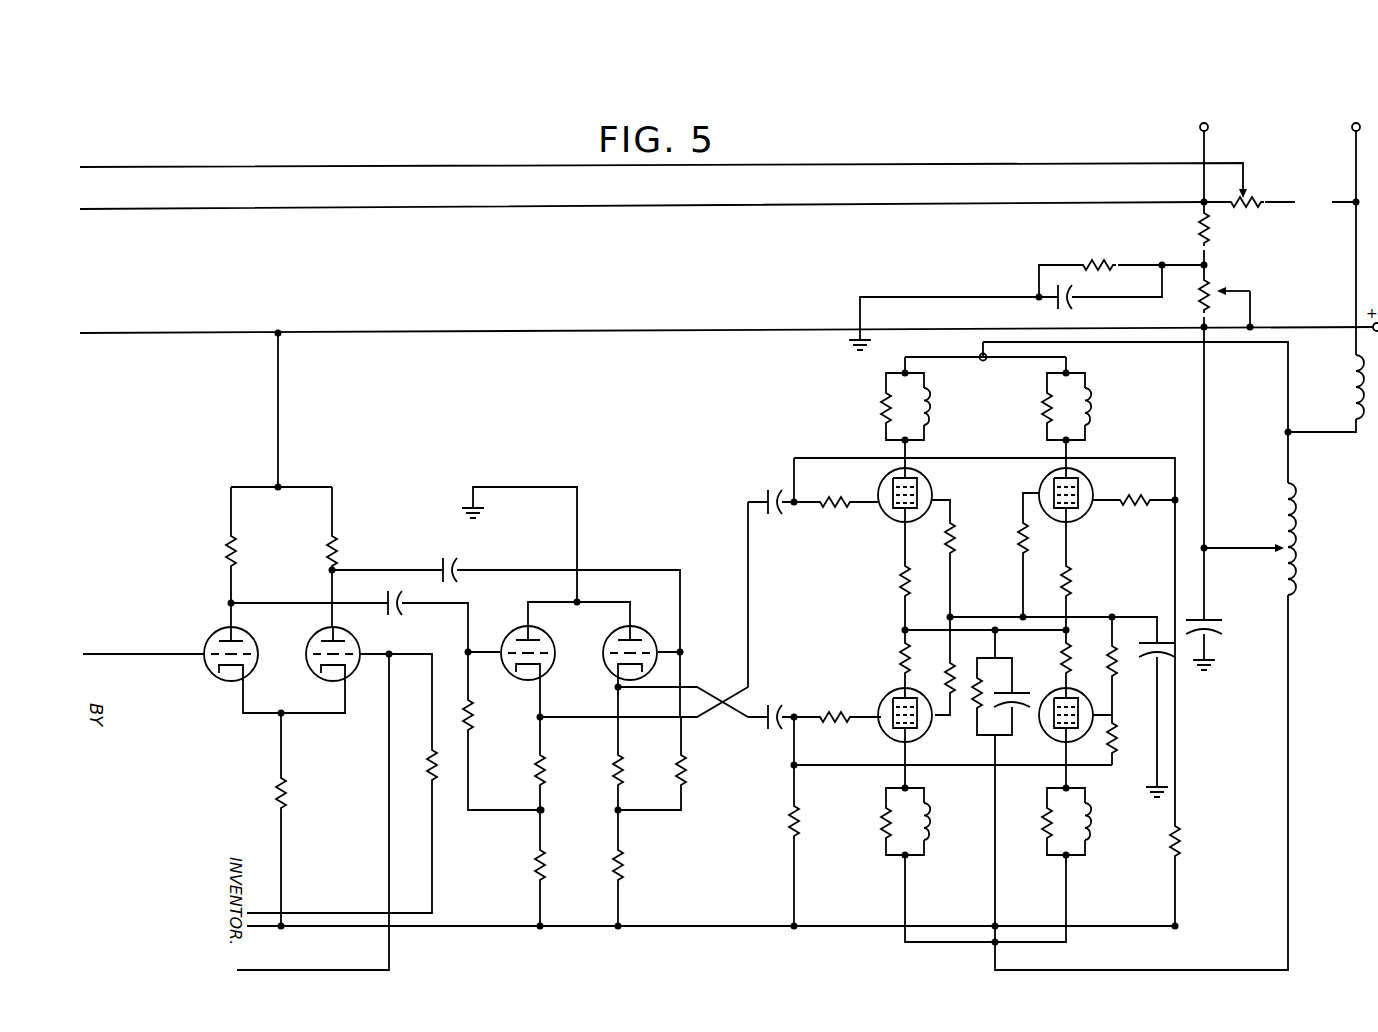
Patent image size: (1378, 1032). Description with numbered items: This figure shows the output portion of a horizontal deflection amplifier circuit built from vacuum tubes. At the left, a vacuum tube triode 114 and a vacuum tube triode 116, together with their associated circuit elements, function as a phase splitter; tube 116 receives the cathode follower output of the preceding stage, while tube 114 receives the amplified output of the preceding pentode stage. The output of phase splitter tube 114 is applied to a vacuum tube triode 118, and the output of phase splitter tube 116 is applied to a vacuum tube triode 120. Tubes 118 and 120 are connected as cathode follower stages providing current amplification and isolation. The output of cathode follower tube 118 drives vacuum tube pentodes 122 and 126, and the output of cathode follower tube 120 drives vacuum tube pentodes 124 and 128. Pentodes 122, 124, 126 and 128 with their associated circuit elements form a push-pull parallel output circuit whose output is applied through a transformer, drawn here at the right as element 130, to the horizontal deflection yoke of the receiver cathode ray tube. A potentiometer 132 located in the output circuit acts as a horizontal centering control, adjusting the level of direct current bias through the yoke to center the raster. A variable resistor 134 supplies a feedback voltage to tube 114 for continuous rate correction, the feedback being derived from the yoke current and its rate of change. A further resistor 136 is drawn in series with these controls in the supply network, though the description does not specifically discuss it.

The vacuum tube triode 114 is at (212, 632).
The vacuum tube triode 116 is at (316, 636).
The vacuum tube triode 118 is at (522, 628).
The vacuum tube triode 120 is at (603, 646).
The vacuum tube pentode 122 is at (933, 487).
The vacuum tube pentode 124 is at (882, 700).
The vacuum tube pentode 126 is at (1082, 512).
The vacuum tube pentode 128 is at (1064, 695).
The output transformer 130 is at (1345, 542).
The potentiometer 132 is at (1197, 298).
The variable resistor 134 is at (1247, 198).
The resistor 136 is at (1200, 238).